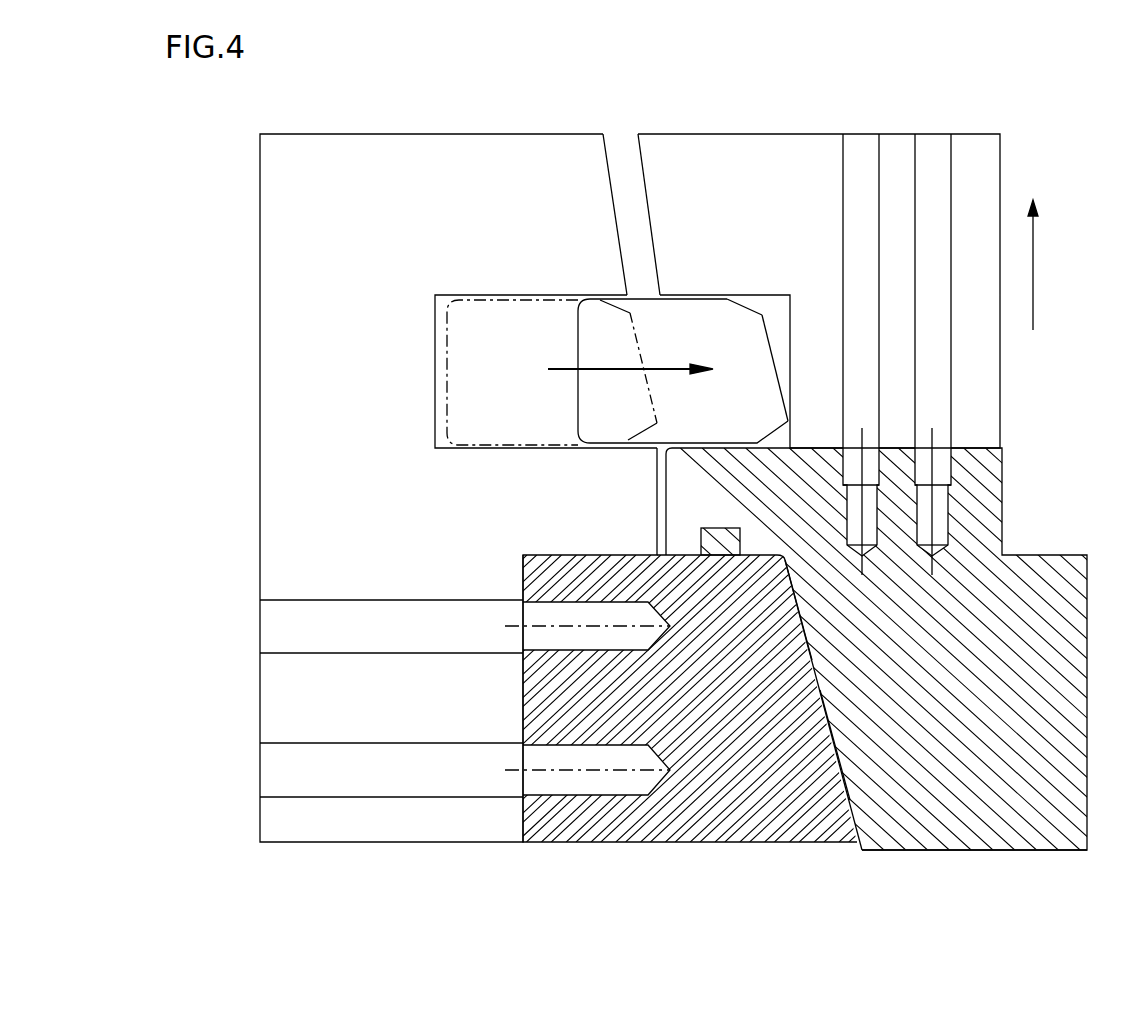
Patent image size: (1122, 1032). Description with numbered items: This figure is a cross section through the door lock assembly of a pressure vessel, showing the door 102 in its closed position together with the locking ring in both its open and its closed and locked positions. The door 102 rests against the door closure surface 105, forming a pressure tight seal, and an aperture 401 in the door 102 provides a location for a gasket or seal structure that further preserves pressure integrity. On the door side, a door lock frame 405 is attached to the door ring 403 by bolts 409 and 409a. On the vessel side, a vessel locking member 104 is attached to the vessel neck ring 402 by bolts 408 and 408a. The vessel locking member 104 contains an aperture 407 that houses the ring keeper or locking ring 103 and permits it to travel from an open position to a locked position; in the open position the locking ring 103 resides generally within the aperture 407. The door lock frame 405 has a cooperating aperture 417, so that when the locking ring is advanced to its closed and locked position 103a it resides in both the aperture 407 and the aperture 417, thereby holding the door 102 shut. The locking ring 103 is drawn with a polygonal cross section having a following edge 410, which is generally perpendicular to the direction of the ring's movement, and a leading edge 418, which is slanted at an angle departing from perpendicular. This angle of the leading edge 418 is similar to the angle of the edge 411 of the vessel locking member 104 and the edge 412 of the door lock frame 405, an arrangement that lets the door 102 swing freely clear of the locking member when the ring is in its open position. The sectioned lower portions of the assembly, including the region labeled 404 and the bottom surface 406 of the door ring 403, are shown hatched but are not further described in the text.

The door 102 is at (800, 617).
The locking ring 103 is at (580, 372).
The closed and locked position 103a is at (673, 349).
The vessel locking member 104 is at (458, 488).
The door closure surface 105 is at (808, 650).
The aperture 401 is at (720, 541).
The vessel neck ring 402 is at (770, 835).
The door ring 403 is at (1018, 588).
The inclined sliding surface 404 is at (830, 740).
The door lock frame 405 is at (819, 291).
The bottom surface 406 is at (1055, 852).
The aperture 407 is at (440, 302).
The bolt 408 is at (377, 636).
The bolt 408a is at (445, 776).
The bolt 409 is at (860, 190).
The bolt 409a is at (935, 188).
The following edge 410 is at (580, 393).
The edge 411 is at (612, 217).
The edge 412 is at (652, 217).
The aperture 417 is at (762, 305).
The leading edge 418 is at (778, 378).